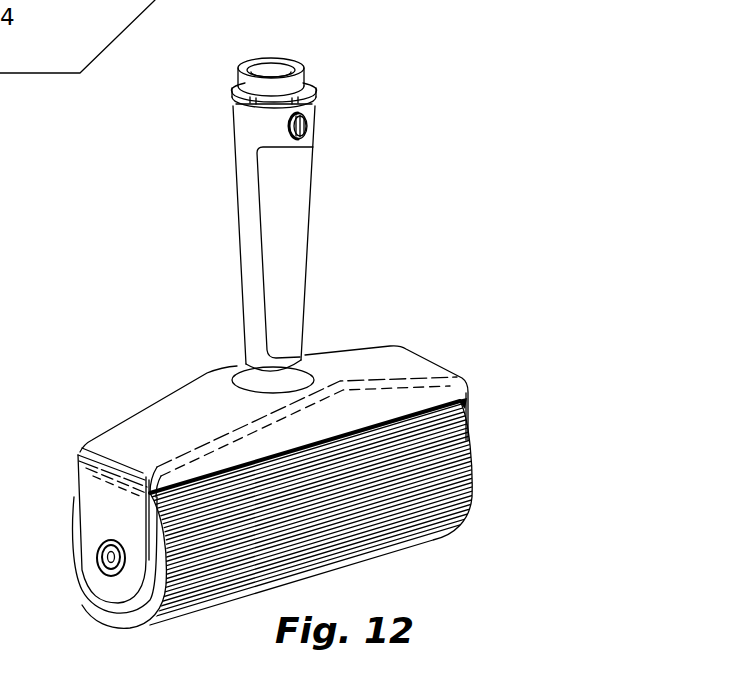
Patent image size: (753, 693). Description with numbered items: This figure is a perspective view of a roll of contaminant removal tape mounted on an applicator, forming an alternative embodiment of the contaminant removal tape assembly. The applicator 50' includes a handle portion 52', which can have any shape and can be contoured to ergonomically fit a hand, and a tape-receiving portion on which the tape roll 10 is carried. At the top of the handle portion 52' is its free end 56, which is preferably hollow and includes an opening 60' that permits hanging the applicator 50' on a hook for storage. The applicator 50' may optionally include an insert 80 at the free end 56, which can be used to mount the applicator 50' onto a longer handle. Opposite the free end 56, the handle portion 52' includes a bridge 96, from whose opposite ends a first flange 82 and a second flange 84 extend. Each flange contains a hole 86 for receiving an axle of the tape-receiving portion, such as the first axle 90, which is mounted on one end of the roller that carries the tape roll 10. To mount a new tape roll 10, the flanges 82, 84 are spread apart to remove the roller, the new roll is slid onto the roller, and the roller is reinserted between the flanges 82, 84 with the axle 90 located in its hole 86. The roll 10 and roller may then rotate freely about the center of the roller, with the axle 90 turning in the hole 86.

The tape roll 10 is at (420, 545).
The applicator 50' is at (271, 342).
The handle portion 52' is at (248, 249).
The free end 56 is at (243, 119).
The opening 60' is at (336, 130).
The insert 80 is at (246, 66).
The first flange 82 is at (87, 483).
The second flange 84 is at (461, 417).
The hole 86 is at (118, 573).
The first axle 90 is at (100, 556).
The bridge 96 is at (188, 405).